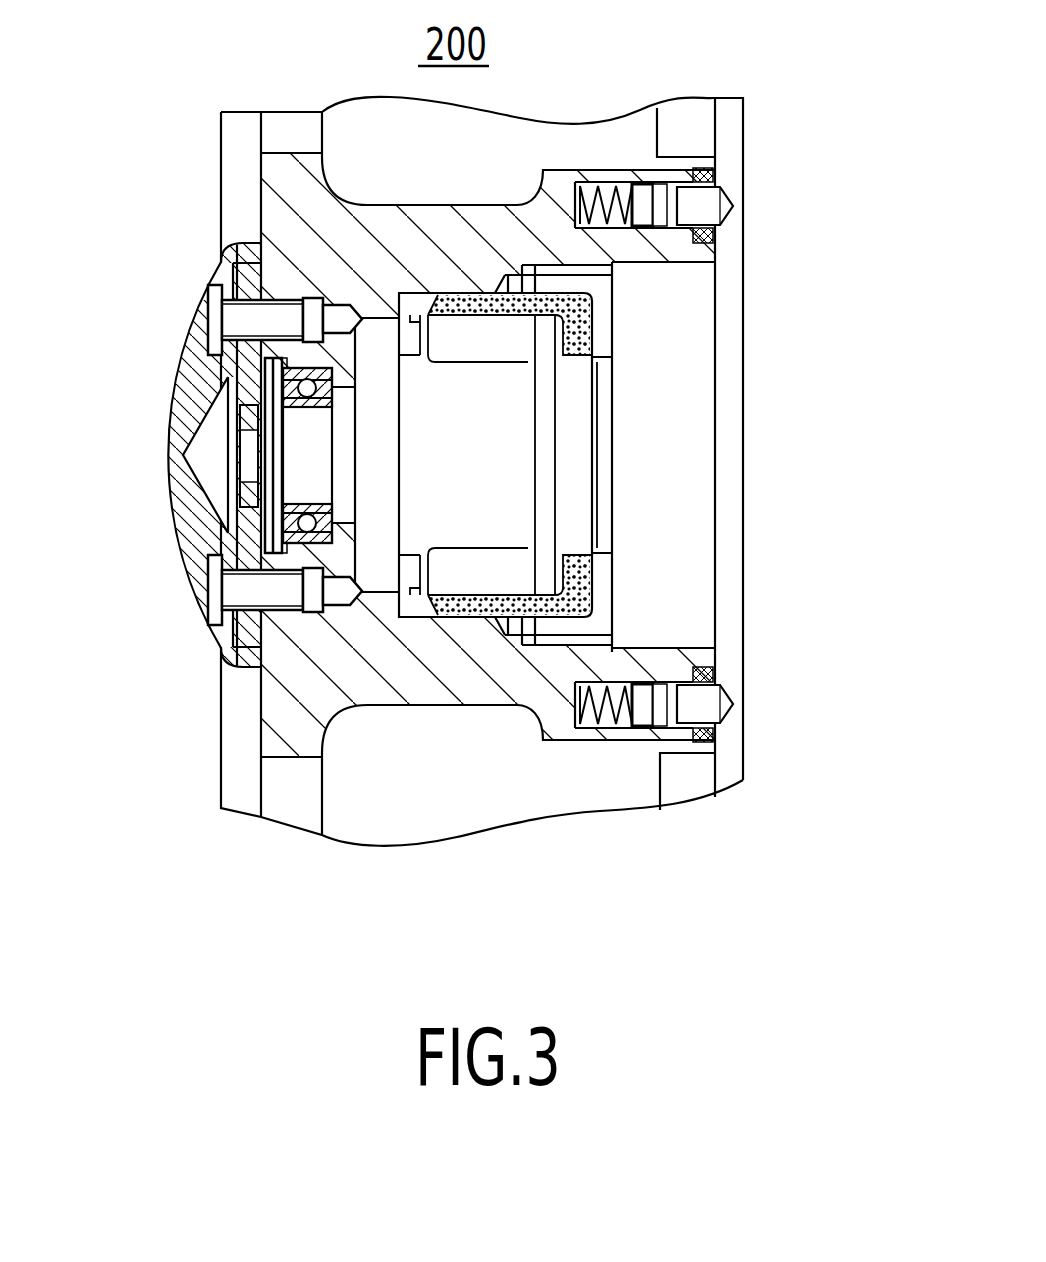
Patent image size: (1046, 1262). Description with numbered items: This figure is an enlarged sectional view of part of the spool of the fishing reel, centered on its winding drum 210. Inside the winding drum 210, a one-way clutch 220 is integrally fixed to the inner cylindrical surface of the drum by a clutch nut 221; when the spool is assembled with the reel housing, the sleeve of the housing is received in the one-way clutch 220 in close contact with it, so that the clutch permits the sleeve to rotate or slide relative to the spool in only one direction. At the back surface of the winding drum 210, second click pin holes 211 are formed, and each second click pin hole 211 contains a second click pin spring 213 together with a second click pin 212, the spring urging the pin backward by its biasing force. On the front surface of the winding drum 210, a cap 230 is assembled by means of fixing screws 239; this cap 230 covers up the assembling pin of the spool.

The winding drum 210 is at (280, 700).
The second click pin hole 211 is at (590, 740).
The second click pin 212 is at (703, 715).
The second click pin spring 213 is at (645, 733).
The one-way clutch 220 is at (488, 560).
The clutch nut 221 is at (573, 555).
The cap 230 is at (190, 403).
The fixing screw 239 is at (213, 300).